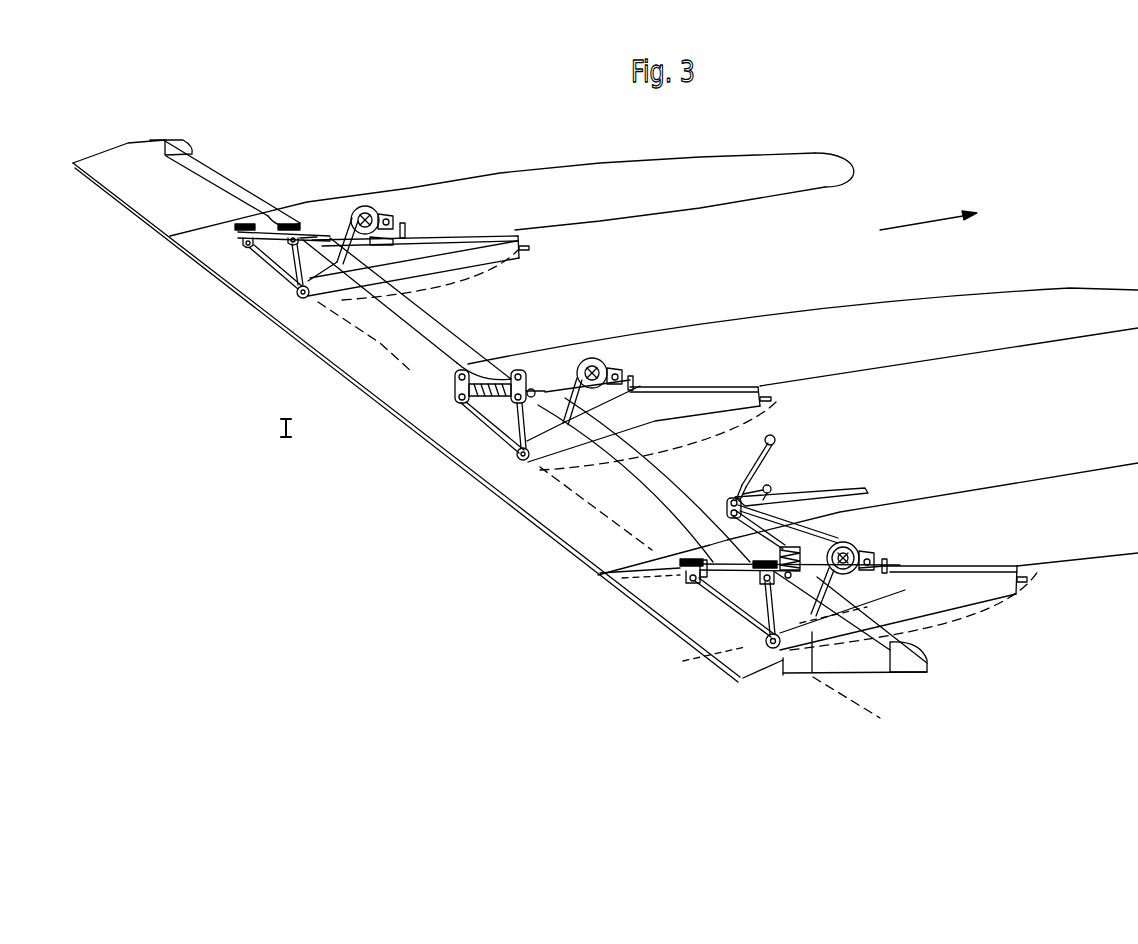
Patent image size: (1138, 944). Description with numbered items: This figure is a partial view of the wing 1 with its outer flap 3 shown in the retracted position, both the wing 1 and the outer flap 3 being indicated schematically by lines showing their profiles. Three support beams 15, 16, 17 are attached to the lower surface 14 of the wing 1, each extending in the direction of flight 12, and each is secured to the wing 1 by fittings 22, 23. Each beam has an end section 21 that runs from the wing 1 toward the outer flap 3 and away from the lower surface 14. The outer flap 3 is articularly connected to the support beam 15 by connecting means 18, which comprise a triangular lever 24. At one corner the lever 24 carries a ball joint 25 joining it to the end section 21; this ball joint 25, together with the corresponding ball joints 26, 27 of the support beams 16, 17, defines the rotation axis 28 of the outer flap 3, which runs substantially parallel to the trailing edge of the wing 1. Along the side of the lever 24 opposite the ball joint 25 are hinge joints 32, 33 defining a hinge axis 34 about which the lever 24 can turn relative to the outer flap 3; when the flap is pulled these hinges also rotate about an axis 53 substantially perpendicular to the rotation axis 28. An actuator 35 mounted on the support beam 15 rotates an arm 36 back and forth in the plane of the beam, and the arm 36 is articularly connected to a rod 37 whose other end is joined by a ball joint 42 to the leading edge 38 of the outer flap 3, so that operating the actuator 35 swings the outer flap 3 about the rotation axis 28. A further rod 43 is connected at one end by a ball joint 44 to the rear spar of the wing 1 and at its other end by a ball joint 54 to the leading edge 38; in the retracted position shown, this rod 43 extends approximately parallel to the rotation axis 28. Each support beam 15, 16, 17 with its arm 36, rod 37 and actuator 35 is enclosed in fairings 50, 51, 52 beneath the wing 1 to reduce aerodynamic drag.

The wing 1 is at (762, 153).
The outer flap 3 is at (551, 517).
The direction of flight 12 is at (928, 222).
The lower surface 14 is at (1107, 558).
The support beam 15 is at (975, 596).
The support beam 16 is at (765, 408).
The support beam 17 is at (500, 253).
The connecting means 18 is at (293, 310).
The end section 21 is at (774, 651).
The fitting 22 is at (890, 562).
The fitting 23 is at (1023, 564).
The lever 24 is at (710, 597).
The ball joint 25 is at (735, 668).
The ball joint 26 is at (510, 452).
The ball joint 27 is at (295, 292).
The rotation axis 28 is at (869, 701).
The hinge joint 32 is at (695, 583).
The hinge joint 33 is at (748, 603).
The hinge axis 34 is at (630, 582).
The actuator 35 is at (860, 533).
The arm 36 is at (873, 552).
The rod 37 is at (812, 618).
The leading edge 38 is at (927, 662).
The ball joint 42 is at (789, 578).
The rod 43 is at (788, 545).
The ball joint 44 is at (727, 502).
The fairing 50 is at (1027, 603).
The fairing 51 is at (787, 400).
The fairing 52 is at (535, 248).
The axis 53 is at (657, 665).
The ball joint 54 is at (812, 522).